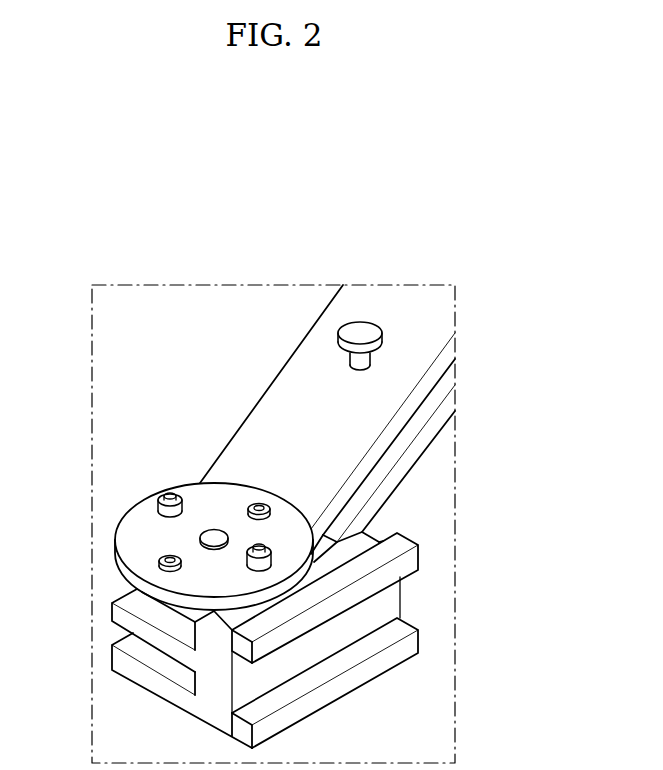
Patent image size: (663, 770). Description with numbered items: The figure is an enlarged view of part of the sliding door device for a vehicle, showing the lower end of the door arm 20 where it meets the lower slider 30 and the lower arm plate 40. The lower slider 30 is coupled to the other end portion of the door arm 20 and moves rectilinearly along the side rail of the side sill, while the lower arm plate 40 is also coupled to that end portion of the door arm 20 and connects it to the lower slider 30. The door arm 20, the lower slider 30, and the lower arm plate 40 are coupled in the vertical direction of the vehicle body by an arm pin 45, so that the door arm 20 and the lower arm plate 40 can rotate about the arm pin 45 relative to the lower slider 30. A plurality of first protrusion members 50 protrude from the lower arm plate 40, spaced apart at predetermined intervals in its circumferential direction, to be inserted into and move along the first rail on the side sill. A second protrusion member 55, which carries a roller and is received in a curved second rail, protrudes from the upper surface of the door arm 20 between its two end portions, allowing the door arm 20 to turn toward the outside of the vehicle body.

The door arm 20 is at (317, 380).
The lower slider 30 is at (414, 660).
The lower arm plate 40 is at (138, 520).
The arm pin 45 is at (200, 538).
The first protrusion members 50 is at (244, 498).
The second protrusion member 55 is at (371, 331).